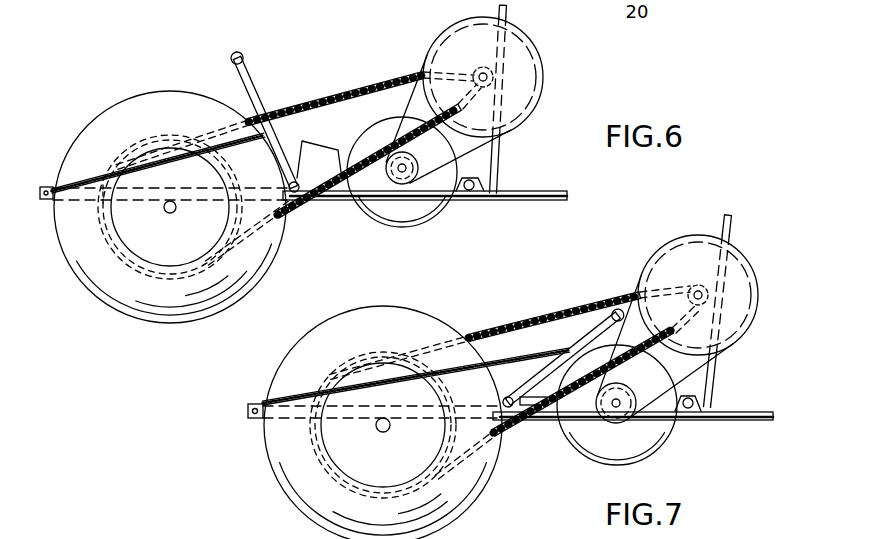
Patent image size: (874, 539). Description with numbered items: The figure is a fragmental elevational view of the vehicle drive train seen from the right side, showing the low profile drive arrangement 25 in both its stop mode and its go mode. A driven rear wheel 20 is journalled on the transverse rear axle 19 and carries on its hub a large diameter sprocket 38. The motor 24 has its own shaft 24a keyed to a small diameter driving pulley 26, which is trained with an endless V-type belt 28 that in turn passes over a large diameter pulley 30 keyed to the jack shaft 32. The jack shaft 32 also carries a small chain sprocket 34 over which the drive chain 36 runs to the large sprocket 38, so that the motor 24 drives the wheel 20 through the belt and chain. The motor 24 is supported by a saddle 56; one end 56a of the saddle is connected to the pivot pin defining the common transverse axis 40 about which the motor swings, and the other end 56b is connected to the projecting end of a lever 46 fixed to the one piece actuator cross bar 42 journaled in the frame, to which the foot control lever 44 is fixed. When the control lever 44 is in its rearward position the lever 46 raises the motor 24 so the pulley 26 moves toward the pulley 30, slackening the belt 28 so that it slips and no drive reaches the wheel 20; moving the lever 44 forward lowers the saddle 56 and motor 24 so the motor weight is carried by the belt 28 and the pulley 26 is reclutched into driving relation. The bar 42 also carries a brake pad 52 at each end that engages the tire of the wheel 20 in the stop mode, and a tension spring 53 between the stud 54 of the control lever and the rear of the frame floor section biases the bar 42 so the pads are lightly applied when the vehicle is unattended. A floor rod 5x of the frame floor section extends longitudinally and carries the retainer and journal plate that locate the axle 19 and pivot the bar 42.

In FIG. 6, the rear axle 19 is at (168, 212).
In FIG. 7, the rear axle 19 is at (382, 432).
In FIG. 6, the driven rear wheel 20 is at (113, 113).
In FIG. 7, the driven rear wheel 20 is at (298, 357).
In FIG. 6, the motor 24 is at (383, 132).
In FIG. 7, the motor 24 is at (657, 381).
In FIG. 6, the motor shaft 24a is at (403, 178).
In FIG. 7, the motor shaft 24a is at (628, 418).
In FIG. 6, the drive arrangement 25 is at (214, 48).
In FIG. 7, the driving pulley 26 is at (614, 394).
In FIG. 6, the endless belt 28 is at (497, 147).
In FIG. 7, the endless belt 28 is at (720, 360).
In FIG. 6, the large diameter pulley 30 is at (522, 54).
In FIG. 7, the large diameter pulley 30 is at (750, 285).
In FIG. 6, the jack shaft 32 is at (492, 78).
In FIG. 7, the jack shaft 32 is at (710, 297).
In FIG. 6, the chain sprocket 34 is at (432, 42).
In FIG. 7, the chain sprocket 34 is at (722, 318).
In FIG. 6, the drive chain 36 is at (311, 107).
In FIG. 7, the drive chain 36 is at (588, 308).
In FIG. 6, the large diameter sprocket 38 is at (238, 164).
In FIG. 7, the large diameter sprocket 38 is at (494, 462).
In FIG. 6, the common axis 40 is at (471, 192).
In FIG. 7, the common axis 40 is at (697, 410).
In FIG. 6, the actuator cross bar 42 is at (304, 210).
In FIG. 7, the actuator cross bar 42 is at (488, 375).
In FIG. 6, the foot control lever 44 is at (237, 78).
In FIG. 7, the foot control lever 44 is at (590, 330).
In FIG. 6, the lever 46 is at (290, 152).
In FIG. 7, the lever 46 is at (530, 408).
In FIG. 7, the brake pad 52 is at (555, 358).
In FIG. 6, the tension spring 53 is at (78, 185).
In FIG. 7, the tension spring 53 is at (280, 405).
In FIG. 6, the stud 54 is at (278, 122).
In FIG. 6, the saddle 56 is at (362, 222).
In FIG. 7, the saddle 56 is at (590, 453).
In FIG. 6, the saddle end 56a is at (495, 172).
In FIG. 7, the saddle end 56a is at (722, 393).
In FIG. 6, the saddle other end 56b is at (335, 150).
In FIG. 7, the saddle other end 56b is at (530, 386).
In FIG. 6, the floor rod 5x is at (434, 212).